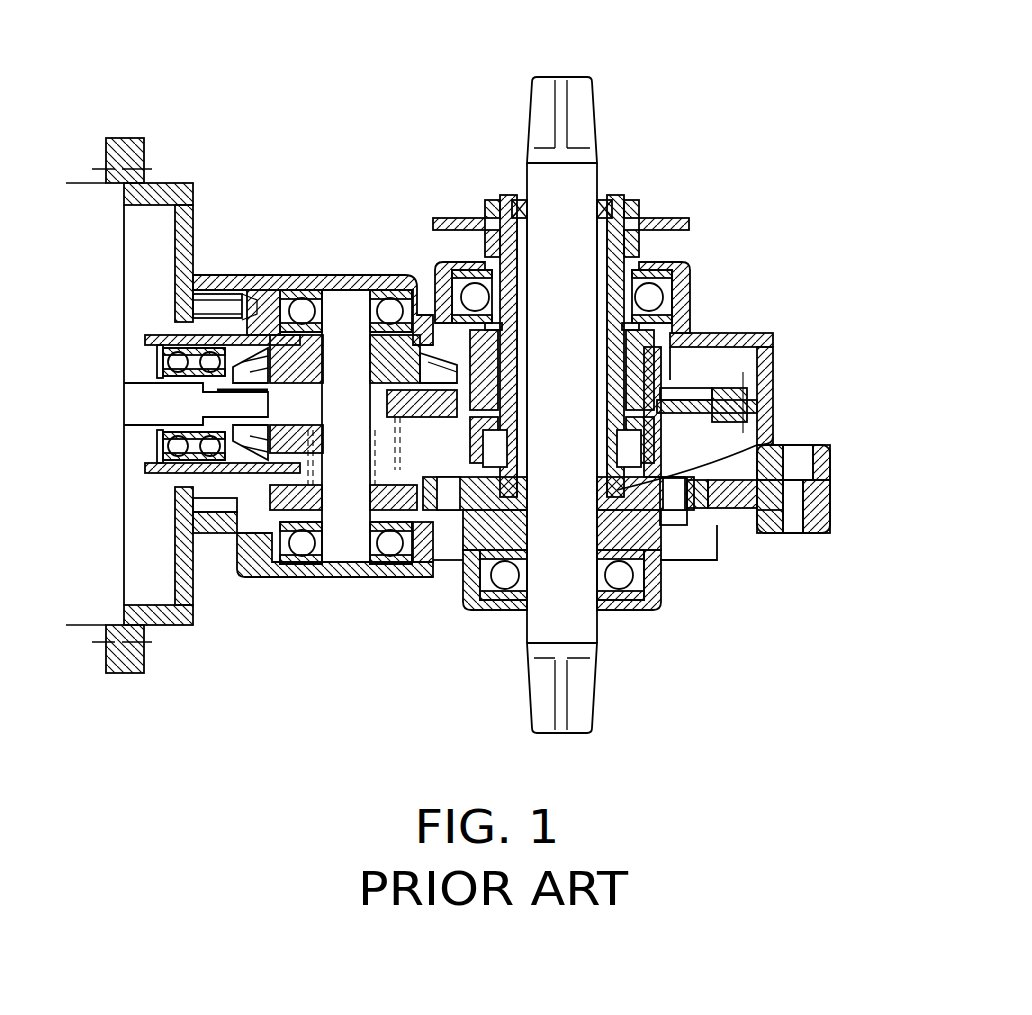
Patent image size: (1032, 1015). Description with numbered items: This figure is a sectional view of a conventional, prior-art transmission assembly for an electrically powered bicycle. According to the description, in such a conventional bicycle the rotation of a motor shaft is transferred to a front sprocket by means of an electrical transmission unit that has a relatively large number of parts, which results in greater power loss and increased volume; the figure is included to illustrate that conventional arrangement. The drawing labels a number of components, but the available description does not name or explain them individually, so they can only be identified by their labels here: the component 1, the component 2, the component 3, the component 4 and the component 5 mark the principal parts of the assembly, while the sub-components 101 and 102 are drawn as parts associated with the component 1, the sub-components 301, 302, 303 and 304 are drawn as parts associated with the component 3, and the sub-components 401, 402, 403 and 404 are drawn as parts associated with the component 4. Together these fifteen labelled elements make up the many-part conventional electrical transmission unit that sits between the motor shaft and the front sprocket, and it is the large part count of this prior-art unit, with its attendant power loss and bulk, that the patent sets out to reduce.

The drive shaft 1 is at (541, 106).
The output shaft 2 is at (830, 465).
The output gear housing 3 is at (695, 367).
The gear box housing 4 is at (290, 445).
The flywheel 5 is at (153, 230).
The bearing 101 is at (655, 293).
The flange 102 is at (658, 213).
The bearing housing 301 is at (665, 612).
The bearing seat 302 is at (708, 530).
The oil seal 303 is at (773, 533).
The fillet 304 is at (773, 437).
The bevel pinion 401 is at (300, 350).
The driven gear 402 is at (303, 487).
The transmission gear 403 is at (440, 405).
The vertical shaft 404 is at (346, 300).